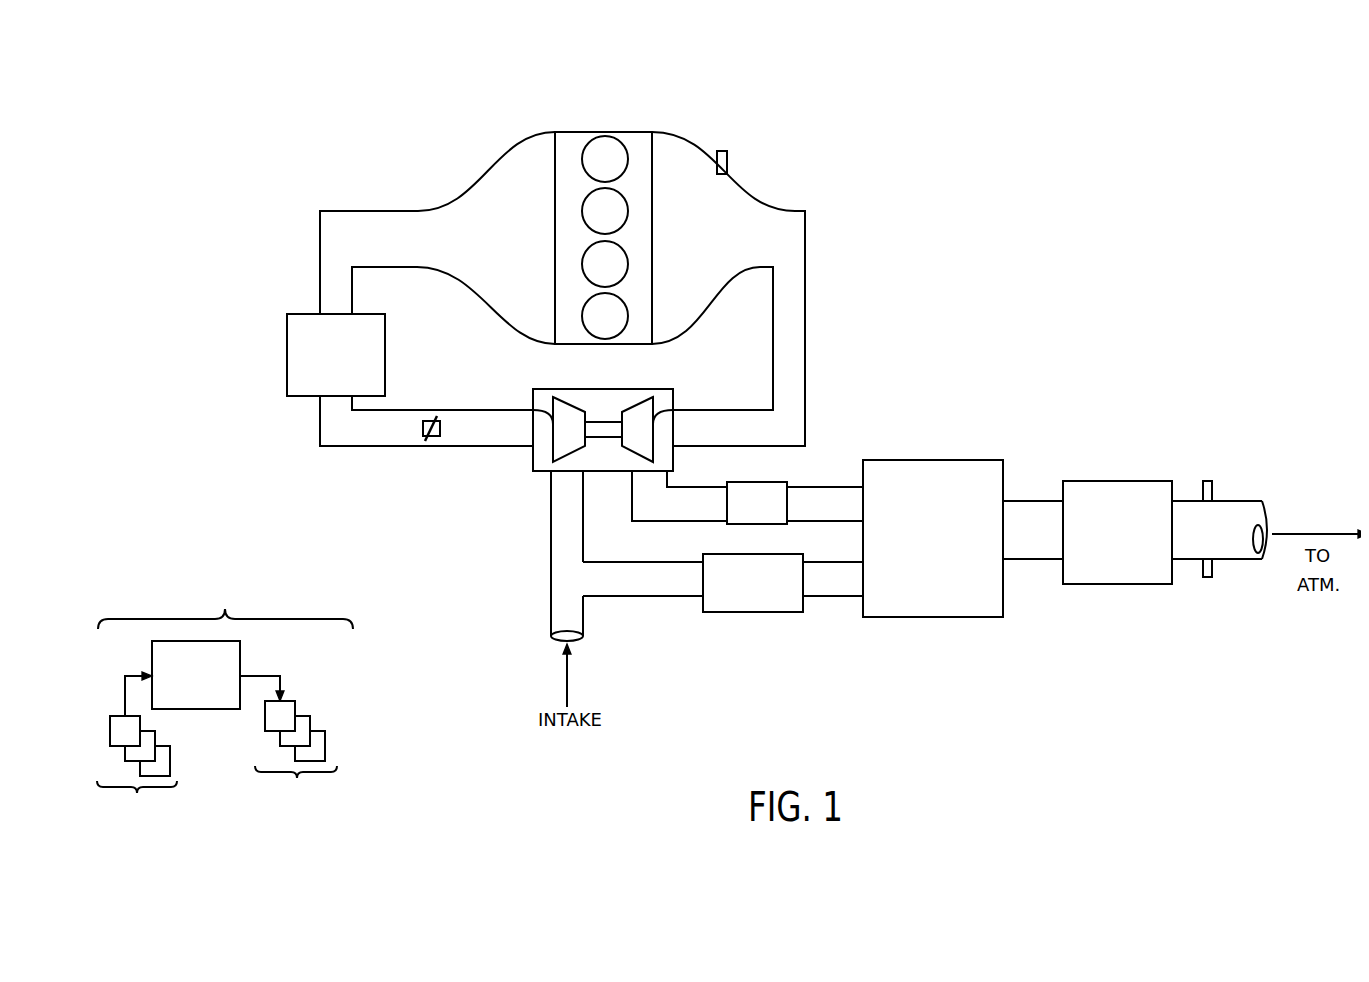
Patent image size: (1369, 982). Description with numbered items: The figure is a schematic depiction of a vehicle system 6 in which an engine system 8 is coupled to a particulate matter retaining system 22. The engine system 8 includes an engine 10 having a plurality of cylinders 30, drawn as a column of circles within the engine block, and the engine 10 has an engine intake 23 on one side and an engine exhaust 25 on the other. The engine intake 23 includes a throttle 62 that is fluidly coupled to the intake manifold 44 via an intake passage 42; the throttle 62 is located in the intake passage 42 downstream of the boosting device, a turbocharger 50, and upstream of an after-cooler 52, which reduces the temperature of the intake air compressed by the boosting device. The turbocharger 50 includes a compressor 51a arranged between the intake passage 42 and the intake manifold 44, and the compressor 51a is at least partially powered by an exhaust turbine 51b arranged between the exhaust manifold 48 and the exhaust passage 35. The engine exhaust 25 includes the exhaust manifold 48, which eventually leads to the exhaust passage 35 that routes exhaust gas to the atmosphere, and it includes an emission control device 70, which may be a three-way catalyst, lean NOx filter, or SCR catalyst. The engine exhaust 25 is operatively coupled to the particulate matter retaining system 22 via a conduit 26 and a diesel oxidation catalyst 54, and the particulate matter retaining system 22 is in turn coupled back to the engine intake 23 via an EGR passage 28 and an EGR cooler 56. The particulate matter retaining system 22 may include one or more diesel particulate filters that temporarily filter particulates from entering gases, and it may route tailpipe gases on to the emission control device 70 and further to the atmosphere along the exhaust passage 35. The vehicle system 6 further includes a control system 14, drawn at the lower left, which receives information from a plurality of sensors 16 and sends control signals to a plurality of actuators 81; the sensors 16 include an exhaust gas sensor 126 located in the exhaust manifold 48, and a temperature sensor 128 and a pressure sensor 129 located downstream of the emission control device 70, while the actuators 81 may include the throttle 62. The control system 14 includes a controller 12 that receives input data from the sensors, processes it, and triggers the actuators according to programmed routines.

The vehicle system 6 is at (243, 130).
The engine system 8 is at (777, 97).
The engine 10 is at (652, 222).
The cylinders 30 is at (625, 153).
The intake manifold 44 is at (517, 250).
The exhaust manifold 48 is at (732, 250).
The exhaust gas sensor 126 is at (727, 168).
The after-cooler 52 is at (363, 315).
The throttle 62 is at (440, 428).
The turbocharger 50 is at (600, 390).
The compressor 51a is at (533, 401).
The exhaust turbine 51b is at (673, 402).
The intake passage 42 is at (550, 585).
The EGR passage 28 is at (607, 598).
The EGR cooler 56 is at (750, 613).
The conduit 26 is at (682, 488).
The diesel oxidation catalyst (DOC) 54 is at (748, 483).
The particulate matter retaining system 22 is at (1005, 468).
The emission control device 70 is at (1102, 482).
The exhaust passage 35 is at (1223, 502).
The pressure sensor 129 is at (1208, 482).
The temperature sensor 128 is at (1212, 563).
The engine exhaust 25 is at (867, 401).
The engine intake 23 is at (481, 550).
The control system 14 is at (225, 599).
The controller 12 is at (196, 675).
The sensors 16 is at (137, 777).
The actuators 81 is at (296, 762).